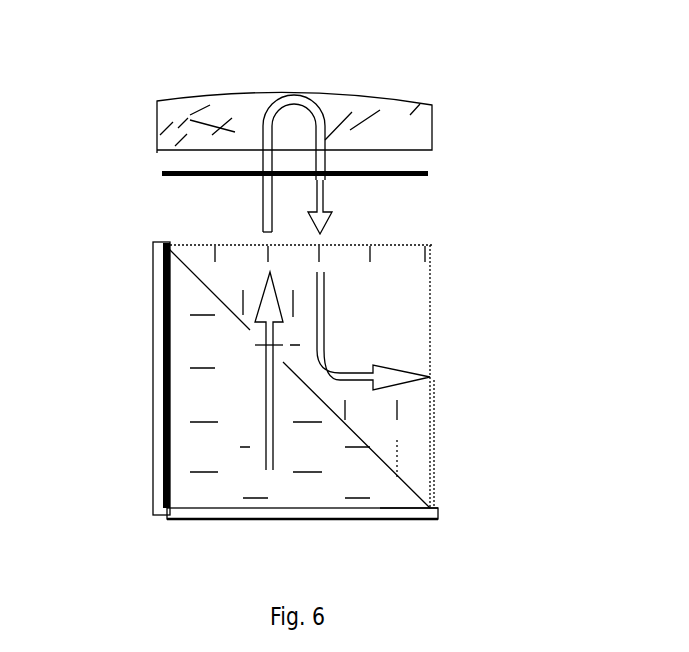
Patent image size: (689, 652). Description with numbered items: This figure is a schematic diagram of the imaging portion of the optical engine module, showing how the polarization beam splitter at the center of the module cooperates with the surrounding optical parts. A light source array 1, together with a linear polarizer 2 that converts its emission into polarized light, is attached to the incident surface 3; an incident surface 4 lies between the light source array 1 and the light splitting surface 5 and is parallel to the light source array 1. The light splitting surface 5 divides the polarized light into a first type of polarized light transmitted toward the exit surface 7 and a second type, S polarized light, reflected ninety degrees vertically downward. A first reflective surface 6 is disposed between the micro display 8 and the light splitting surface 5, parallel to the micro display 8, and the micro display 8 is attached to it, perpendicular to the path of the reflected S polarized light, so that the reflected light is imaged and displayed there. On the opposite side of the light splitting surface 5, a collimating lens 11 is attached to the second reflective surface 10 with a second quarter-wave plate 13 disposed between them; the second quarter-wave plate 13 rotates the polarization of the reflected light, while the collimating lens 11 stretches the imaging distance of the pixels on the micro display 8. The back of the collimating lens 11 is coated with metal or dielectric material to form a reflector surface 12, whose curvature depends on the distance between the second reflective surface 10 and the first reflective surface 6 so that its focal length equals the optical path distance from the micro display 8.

The light source array 1 is at (148, 335).
The linear polarizer 2 is at (167, 243).
The incident surface 3 is at (400, 298).
The incident surface 4 is at (170, 290).
The light splitting surface 5 is at (397, 485).
The first reflective surface 6 is at (417, 518).
The exit surface 7 is at (432, 330).
The micro display 8 is at (278, 520).
The second reflective surface 10 is at (400, 235).
The collimating lens 11 is at (197, 123).
The reflector surface 12 is at (340, 97).
The second quarter-wave plate 13 is at (433, 173).